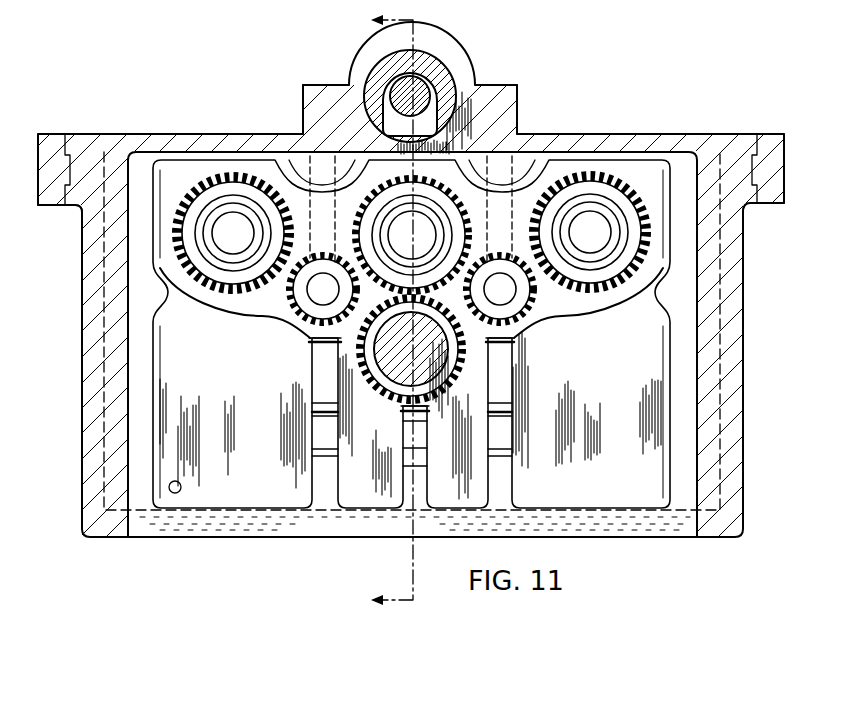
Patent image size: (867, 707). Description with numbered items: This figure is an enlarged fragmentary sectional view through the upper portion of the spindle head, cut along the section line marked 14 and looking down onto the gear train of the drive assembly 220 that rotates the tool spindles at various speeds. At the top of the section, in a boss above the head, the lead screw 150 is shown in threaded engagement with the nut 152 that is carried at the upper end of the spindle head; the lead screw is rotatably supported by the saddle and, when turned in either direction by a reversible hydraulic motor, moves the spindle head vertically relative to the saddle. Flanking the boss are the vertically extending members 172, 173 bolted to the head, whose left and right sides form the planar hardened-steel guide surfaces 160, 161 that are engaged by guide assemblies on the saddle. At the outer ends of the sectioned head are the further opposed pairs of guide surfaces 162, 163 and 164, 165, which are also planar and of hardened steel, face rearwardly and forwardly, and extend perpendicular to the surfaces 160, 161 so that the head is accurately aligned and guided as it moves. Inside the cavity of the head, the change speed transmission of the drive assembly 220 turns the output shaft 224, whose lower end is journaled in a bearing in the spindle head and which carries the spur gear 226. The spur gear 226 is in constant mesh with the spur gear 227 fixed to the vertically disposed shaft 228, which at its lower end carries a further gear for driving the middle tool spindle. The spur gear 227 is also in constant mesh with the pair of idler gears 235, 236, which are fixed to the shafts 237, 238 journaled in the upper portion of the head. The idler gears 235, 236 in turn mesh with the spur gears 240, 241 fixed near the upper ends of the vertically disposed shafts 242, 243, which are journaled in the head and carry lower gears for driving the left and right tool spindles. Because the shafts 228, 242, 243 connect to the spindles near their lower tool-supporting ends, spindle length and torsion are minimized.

The section line 14- 14 is at (380, 313).
The lead screw 150 is at (421, 78).
The nut 152 is at (443, 77).
The guide surface 160 is at (303, 96).
The guide surface 161 is at (517, 99).
The guide surface 162 is at (50, 133).
The guide surface 163 is at (68, 208).
The guide surface 164 is at (762, 133).
The guide surface 165 is at (752, 205).
The vertically extending member 172 is at (305, 84).
The vertically extending member 173 is at (512, 85).
The drive assembly 220 is at (252, 140).
The output shaft 224 is at (387, 368).
The spur gear 226 is at (433, 388).
The spur gear 227 is at (355, 207).
The shaft 228 is at (425, 227).
The idler gear 235 is at (302, 321).
The idler gear 236 is at (530, 323).
The shaft 237 is at (325, 303).
The shaft 238 is at (508, 297).
The spur gear 240 is at (238, 284).
The spur gear 241 is at (590, 284).
The shaft 242 is at (225, 246).
The shaft 243 is at (605, 248).